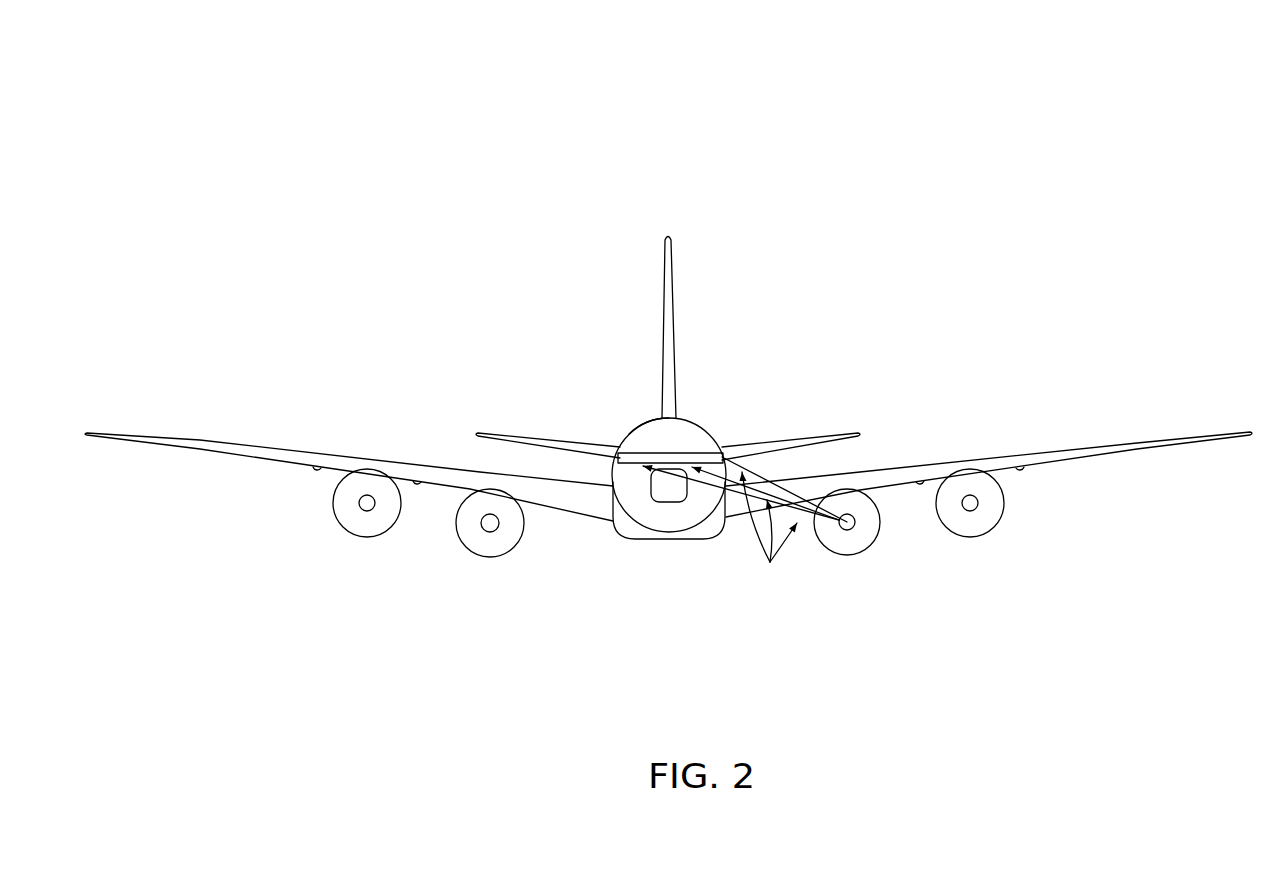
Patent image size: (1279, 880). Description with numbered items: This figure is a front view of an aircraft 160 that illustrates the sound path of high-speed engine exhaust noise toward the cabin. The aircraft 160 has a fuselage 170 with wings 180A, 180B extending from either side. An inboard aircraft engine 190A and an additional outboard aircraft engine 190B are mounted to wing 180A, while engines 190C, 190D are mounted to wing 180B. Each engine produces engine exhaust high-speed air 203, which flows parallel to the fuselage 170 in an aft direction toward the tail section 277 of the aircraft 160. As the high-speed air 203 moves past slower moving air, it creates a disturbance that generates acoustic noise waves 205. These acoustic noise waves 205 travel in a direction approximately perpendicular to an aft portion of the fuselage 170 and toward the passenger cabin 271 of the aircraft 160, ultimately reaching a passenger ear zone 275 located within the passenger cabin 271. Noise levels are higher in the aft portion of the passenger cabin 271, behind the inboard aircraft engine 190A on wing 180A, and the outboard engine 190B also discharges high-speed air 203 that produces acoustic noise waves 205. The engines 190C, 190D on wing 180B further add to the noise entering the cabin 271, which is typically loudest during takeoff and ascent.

The aircraft 160 is at (1004, 78).
The fuselage 170 is at (703, 422).
The wing 180A is at (1067, 452).
The wing 180B is at (318, 455).
The inboard aircraft engine 190A is at (843, 556).
The outboard aircraft engine 190B is at (1004, 507).
The aircraft engine 190C is at (469, 556).
The aircraft engine 190D is at (337, 513).
The engine exhaust high-speed air 203 is at (373, 508).
The acoustic noise waves 205 is at (770, 562).
The passenger cabin 271 is at (650, 432).
The passenger ear zone 275 is at (618, 448).
The tail section 277 is at (847, 430).